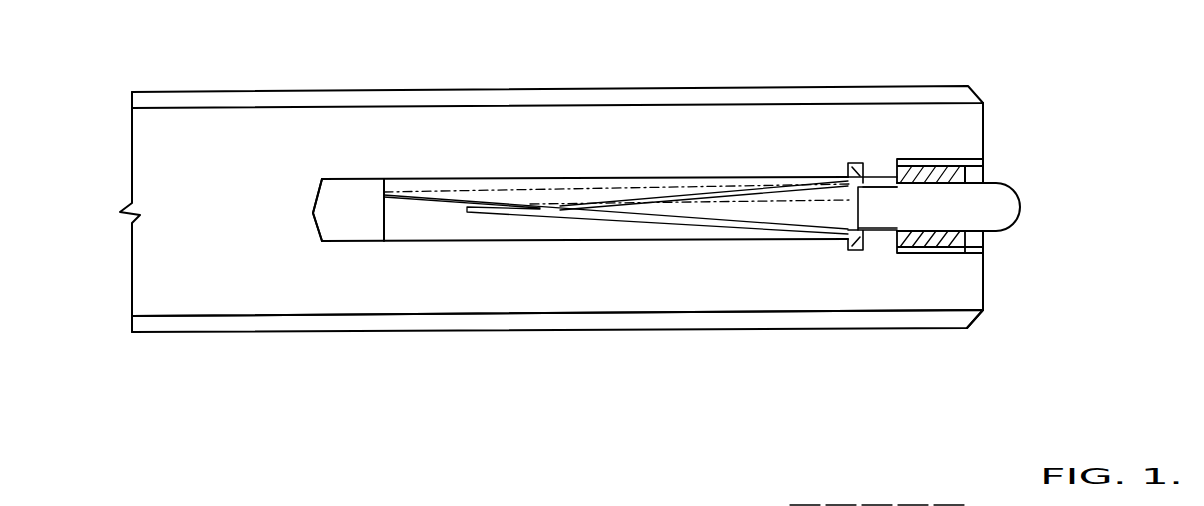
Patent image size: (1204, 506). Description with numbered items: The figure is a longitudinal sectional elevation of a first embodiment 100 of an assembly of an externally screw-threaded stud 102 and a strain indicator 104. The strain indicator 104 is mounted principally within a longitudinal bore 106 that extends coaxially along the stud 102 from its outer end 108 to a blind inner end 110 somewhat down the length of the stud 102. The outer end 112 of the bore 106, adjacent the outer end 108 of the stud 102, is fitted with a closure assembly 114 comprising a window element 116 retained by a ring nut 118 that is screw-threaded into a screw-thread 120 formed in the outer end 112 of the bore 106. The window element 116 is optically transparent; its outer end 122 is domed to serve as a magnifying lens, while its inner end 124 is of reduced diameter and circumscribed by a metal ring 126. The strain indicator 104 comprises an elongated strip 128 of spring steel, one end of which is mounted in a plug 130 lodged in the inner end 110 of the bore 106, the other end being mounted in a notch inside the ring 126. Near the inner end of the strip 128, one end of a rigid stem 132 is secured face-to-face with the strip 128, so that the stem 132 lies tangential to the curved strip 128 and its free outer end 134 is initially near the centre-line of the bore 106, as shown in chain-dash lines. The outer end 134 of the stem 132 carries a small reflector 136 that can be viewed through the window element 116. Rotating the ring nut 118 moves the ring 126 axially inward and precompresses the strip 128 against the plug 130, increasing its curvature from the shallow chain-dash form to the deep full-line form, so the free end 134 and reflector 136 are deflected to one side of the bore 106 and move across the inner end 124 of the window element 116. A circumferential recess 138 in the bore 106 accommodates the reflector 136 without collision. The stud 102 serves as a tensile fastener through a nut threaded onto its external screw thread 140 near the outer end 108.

The first embodiment of assembly 100 is at (627, 85).
The externally screw-threaded stud 102 is at (200, 140).
The strain indicator 104 is at (558, 160).
The longitudinal bore 106 is at (415, 180).
The outer end of stud 108 is at (983, 288).
The blind inner end of bore 110 is at (318, 236).
The outer end of bore 112 is at (940, 256).
The closure assembly 114 is at (998, 237).
The window element 116 is at (991, 198).
The ring nut 118 is at (948, 170).
The screw-thread 120 is at (983, 292).
The outer end of window element 122 is at (1017, 193).
The inner end of window element 124 is at (880, 217).
The metal ring 126 is at (882, 180).
The elongated strip 128 is at (765, 195).
The plug 130 is at (349, 233).
The rigid stem 132 is at (655, 218).
The free outer end of stem 134 is at (828, 221).
The reflector 136 is at (868, 244).
The circumferential recess 138 is at (848, 165).
The external screw thread 140 is at (443, 318).